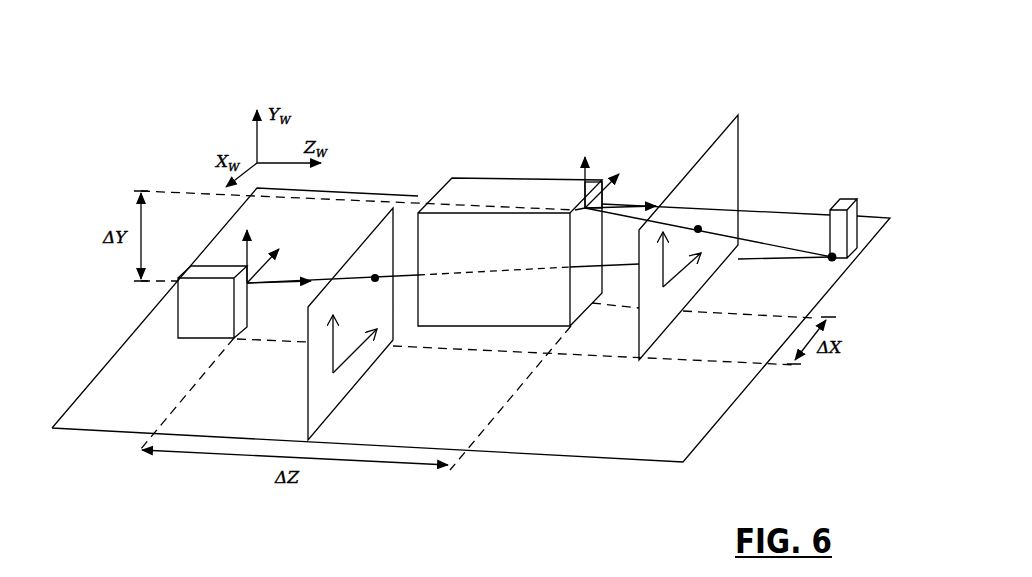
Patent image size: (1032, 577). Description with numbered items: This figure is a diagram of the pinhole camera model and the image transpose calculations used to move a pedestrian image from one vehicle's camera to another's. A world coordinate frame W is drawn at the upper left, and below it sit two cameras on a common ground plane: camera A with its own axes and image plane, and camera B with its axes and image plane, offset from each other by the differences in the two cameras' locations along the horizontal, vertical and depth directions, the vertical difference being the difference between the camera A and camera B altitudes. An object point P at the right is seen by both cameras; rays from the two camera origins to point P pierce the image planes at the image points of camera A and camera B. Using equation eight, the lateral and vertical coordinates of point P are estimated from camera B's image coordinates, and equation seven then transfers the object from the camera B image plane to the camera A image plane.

The world coordinate system W is at (273, 145).
The camera A is at (285, 323).
The camera B is at (676, 210).
The object point P(X,Y,Z) P is at (850, 242).